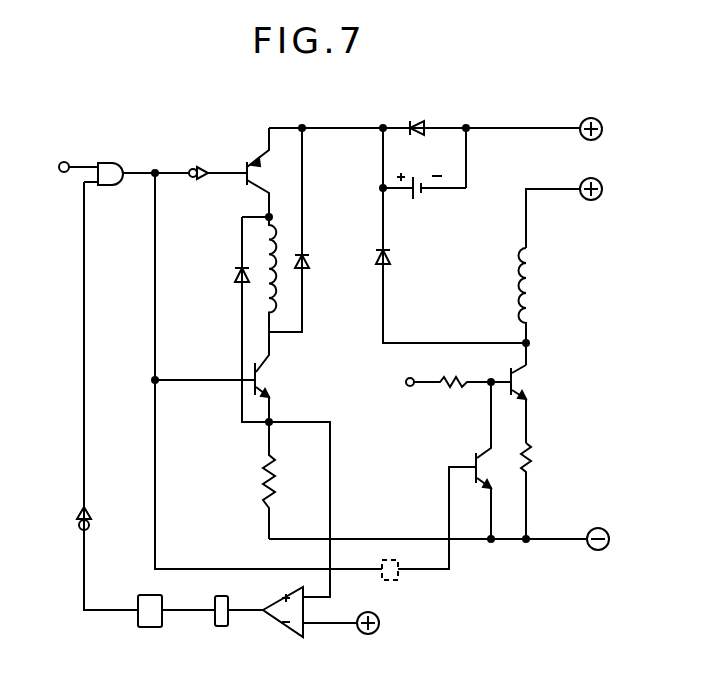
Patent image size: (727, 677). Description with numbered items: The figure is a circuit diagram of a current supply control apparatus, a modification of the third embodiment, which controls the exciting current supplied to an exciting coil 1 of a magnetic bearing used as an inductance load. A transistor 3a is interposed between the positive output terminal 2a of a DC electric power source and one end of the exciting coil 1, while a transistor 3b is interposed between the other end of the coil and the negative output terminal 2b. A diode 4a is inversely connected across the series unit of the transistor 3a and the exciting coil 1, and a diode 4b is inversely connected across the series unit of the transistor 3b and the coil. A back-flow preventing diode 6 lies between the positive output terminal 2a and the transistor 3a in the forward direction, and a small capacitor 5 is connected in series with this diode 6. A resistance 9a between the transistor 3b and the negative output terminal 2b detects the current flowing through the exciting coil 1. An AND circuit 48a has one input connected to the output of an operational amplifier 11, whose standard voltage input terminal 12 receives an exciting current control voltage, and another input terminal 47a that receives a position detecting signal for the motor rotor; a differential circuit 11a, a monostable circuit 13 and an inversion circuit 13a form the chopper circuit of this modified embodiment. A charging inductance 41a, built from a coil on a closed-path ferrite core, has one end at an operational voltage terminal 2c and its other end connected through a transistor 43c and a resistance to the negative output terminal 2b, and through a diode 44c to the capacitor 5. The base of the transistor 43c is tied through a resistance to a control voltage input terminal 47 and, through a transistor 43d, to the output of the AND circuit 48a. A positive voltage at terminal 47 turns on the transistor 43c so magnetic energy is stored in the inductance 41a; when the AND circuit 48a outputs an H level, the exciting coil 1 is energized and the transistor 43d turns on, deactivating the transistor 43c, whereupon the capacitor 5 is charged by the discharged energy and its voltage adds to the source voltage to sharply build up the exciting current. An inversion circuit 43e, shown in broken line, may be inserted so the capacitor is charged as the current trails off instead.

The input terminal 47a is at (64, 162).
The AND circuit 48a is at (112, 186).
The transistor 3a is at (258, 160).
The exciting coil 1 is at (276, 297).
The diode 4b is at (232, 272).
The diode 4a is at (310, 262).
The back-flow preventing diode 6 is at (416, 121).
The capacitor 5 is at (418, 199).
The diode 44c is at (392, 256).
The positive output terminal 2a is at (602, 131).
The operational voltage terminal 2c is at (600, 196).
The charging inductance 41a is at (533, 296).
The transistor 43c is at (520, 382).
The control voltage input terminal 47 is at (406, 387).
The transistor 43d is at (482, 450).
The transistor 3b is at (271, 380).
The resistance 9a is at (265, 474).
The inversion circuit 13a is at (88, 508).
The negative output terminal 2b is at (609, 541).
The inversion circuit 43e is at (398, 580).
The monostable circuit 13 is at (155, 628).
The differential circuit 11a is at (222, 627).
The operational amplifier 11 is at (296, 634).
The standard voltage input terminal 12 is at (364, 634).